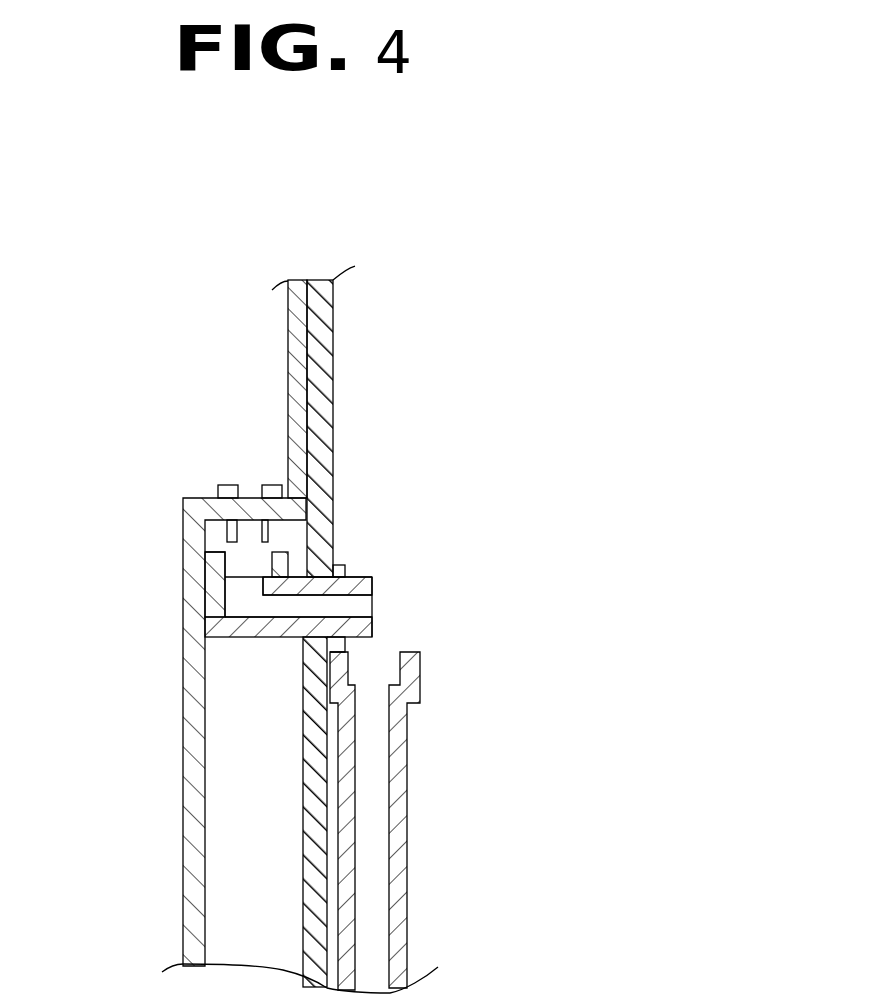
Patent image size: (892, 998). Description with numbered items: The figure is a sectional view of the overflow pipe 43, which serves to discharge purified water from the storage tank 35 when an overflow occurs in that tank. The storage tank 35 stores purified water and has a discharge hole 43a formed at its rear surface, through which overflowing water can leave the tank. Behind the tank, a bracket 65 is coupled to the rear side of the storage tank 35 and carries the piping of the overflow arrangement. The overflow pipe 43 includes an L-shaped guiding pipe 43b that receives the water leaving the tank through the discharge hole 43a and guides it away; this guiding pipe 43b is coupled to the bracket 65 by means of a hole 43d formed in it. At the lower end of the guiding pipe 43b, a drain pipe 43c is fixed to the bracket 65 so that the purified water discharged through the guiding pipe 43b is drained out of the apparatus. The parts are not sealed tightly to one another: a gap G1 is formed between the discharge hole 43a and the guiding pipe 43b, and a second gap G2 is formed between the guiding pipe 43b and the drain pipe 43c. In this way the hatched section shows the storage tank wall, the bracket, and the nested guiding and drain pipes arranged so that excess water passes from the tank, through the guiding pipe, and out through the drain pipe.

The storage tank 35 is at (183, 678).
The overflow pipe 43 is at (447, 646).
The discharge hole 43a is at (248, 495).
The guiding pipe 43b is at (372, 577).
The drain pipe 43c is at (407, 835).
The hole 43d is at (330, 562).
The bracket 65 is at (333, 433).
The gap G1 is at (223, 545).
The gap G2 is at (358, 650).